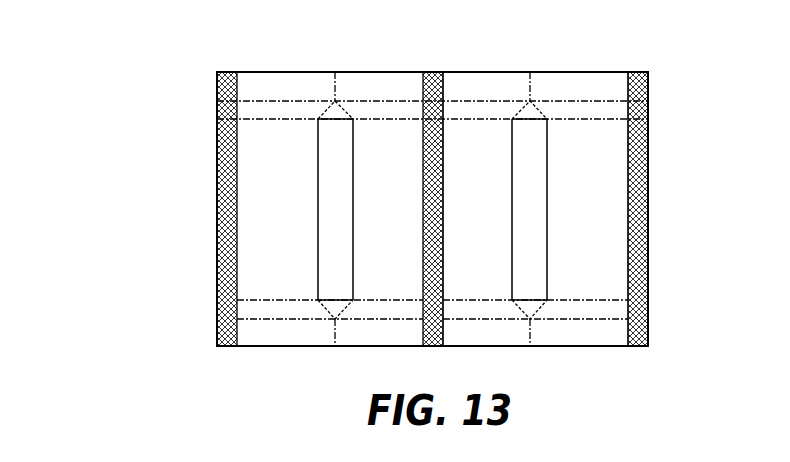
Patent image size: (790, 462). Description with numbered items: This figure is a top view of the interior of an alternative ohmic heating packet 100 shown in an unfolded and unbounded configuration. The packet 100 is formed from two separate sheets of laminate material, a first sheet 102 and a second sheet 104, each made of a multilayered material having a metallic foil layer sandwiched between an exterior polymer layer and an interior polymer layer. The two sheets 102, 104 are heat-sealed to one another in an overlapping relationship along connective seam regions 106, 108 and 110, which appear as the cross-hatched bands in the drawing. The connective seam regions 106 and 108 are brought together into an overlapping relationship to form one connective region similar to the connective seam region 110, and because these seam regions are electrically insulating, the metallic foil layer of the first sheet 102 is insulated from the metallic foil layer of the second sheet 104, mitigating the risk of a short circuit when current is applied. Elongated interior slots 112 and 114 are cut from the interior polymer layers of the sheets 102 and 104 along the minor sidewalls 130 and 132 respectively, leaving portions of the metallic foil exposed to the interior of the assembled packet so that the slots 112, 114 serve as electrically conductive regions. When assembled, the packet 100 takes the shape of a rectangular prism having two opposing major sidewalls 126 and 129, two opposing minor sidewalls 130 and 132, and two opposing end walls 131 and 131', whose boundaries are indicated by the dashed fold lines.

The ohmic heating packet 100 is at (124, 152).
The first sheet 102 is at (277, 269).
The second sheet 104 is at (584, 276).
The connective seam region 106 is at (222, 72).
The connective seam region 108 is at (428, 72).
The connective seam region 110 is at (648, 78).
The elongated interior slot 112 is at (328, 218).
The elongated interior slot 114 is at (537, 206).
The major sidewall 126 is at (477, 138).
The major sidewall 129 is at (263, 158).
The minor sidewall 130 is at (534, 184).
The end wall 131 is at (430, 59).
The end wall 131' is at (533, 344).
The minor sidewall 132 is at (343, 278).